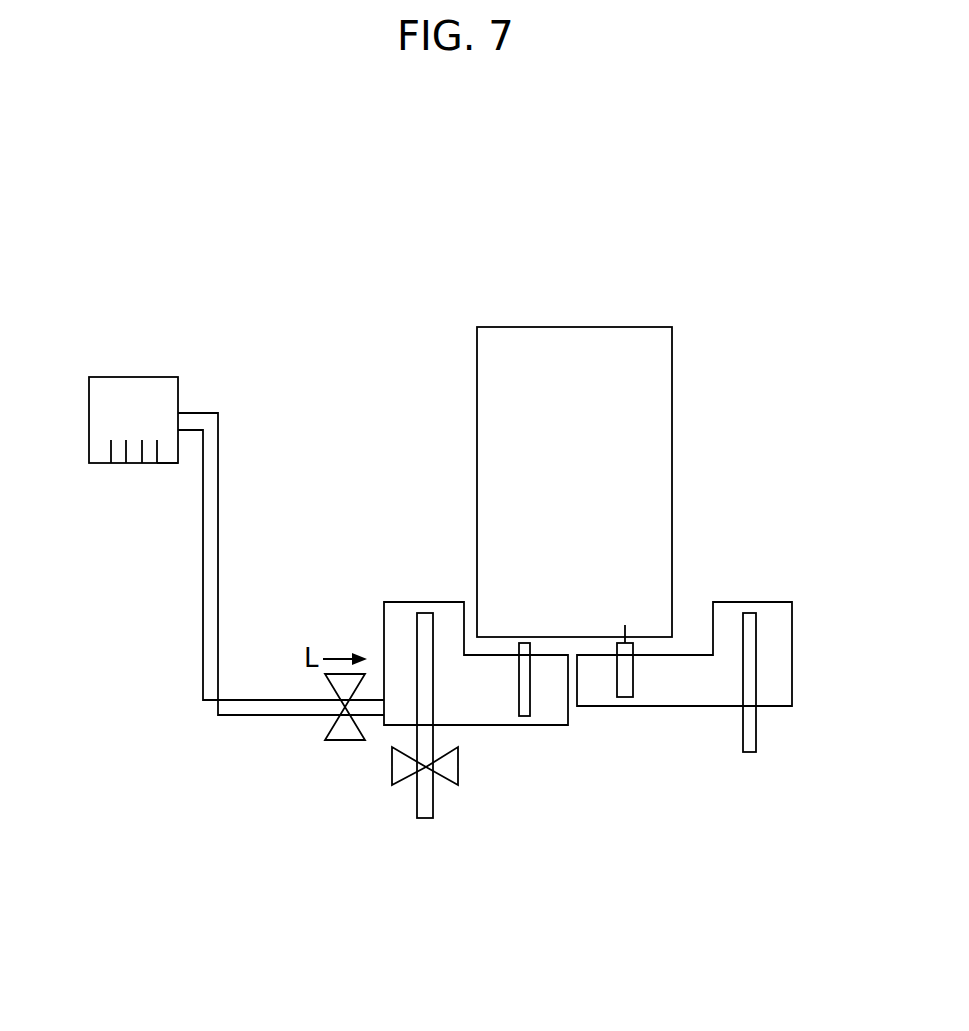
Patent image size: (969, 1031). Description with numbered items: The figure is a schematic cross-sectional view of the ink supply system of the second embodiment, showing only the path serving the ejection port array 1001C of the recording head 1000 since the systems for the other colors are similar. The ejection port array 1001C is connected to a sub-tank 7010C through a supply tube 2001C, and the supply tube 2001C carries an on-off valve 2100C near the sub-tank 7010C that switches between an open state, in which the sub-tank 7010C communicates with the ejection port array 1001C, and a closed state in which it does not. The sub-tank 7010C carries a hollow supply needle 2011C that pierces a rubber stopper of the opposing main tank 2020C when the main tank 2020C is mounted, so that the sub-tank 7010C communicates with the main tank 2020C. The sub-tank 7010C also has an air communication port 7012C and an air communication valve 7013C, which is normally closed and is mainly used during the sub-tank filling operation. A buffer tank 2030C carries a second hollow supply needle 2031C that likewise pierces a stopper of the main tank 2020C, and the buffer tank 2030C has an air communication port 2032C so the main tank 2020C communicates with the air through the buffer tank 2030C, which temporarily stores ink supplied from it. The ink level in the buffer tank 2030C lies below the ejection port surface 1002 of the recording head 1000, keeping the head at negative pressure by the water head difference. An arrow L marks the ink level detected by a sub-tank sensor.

The recording head 1000 is at (137, 375).
The ejection port array 1001C is at (111, 463).
The ejection port surface 1002 is at (170, 463).
The supply tube 2001C is at (203, 657).
The on-off valve 2100C is at (342, 742).
The sub-tank 7010C is at (540, 725).
The air communication port 7012C is at (423, 818).
The air communication valve 7013C is at (407, 782).
The main tank 2020C is at (642, 327).
The supply needle 2011C is at (525, 640).
The buffer tank 2030C is at (603, 707).
The supply needle 2031C is at (625, 625).
The air communication port 2032C is at (757, 743).